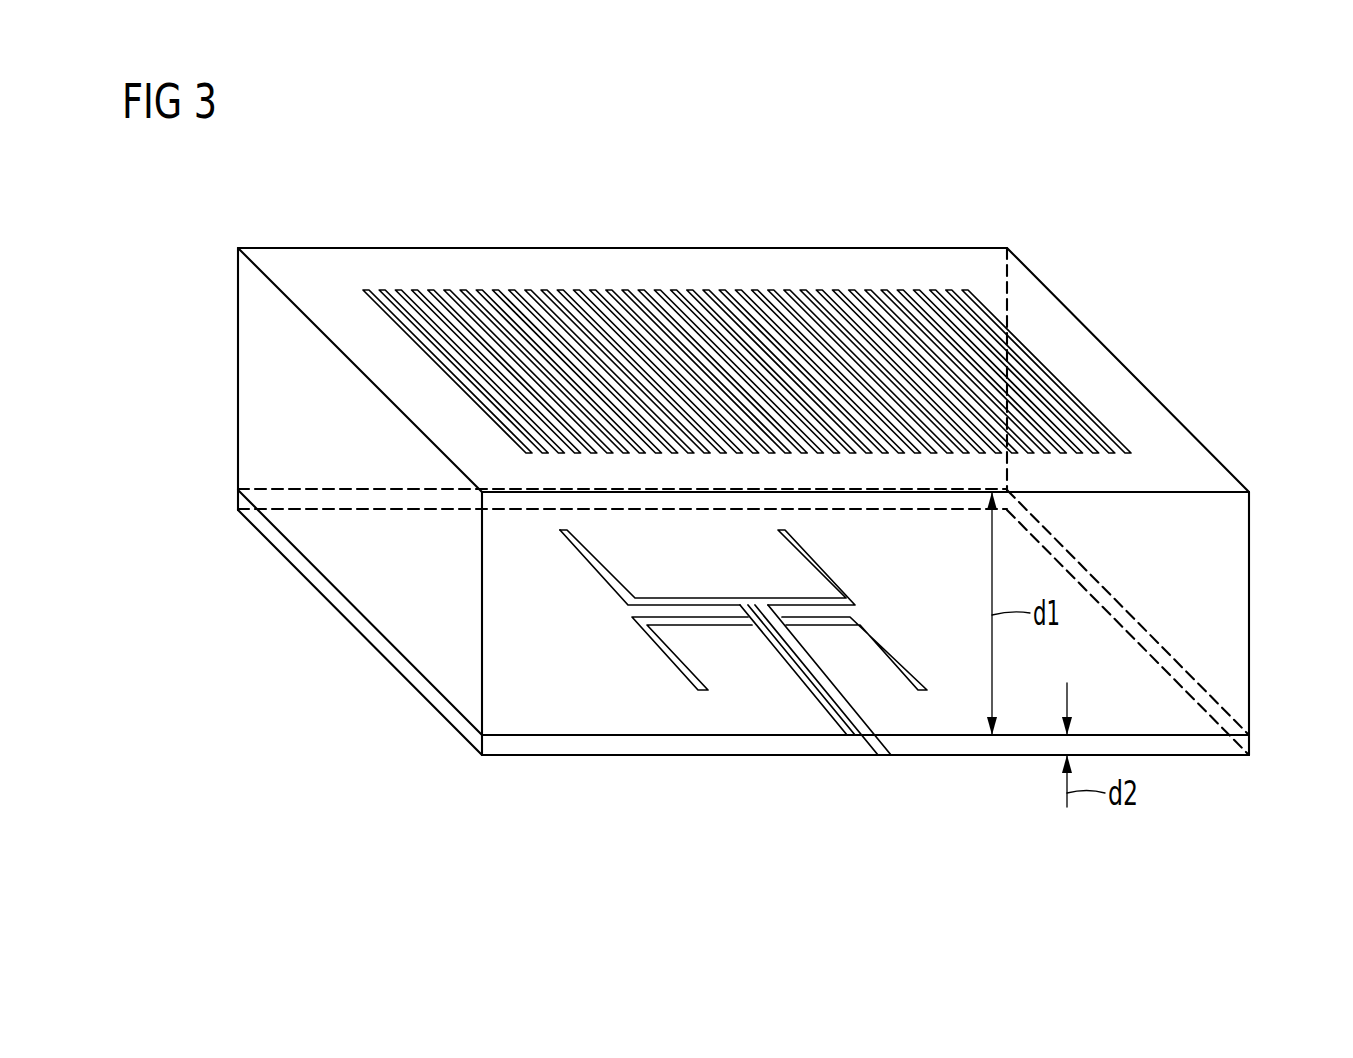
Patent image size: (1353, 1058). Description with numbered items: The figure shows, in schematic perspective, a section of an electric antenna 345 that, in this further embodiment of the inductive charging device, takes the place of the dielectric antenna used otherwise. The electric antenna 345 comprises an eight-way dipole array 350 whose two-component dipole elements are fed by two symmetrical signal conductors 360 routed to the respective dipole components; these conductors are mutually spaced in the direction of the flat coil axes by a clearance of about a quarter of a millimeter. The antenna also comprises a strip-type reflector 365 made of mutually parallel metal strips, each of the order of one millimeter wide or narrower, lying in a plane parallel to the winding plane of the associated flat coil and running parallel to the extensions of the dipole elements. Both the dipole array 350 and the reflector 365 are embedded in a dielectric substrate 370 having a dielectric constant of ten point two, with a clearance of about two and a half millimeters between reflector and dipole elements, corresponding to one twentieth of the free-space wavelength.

The electric antenna 345 is at (202, 272).
The 8-way dipole array 350 is at (680, 697).
The symmetrical signal conductors 360 is at (870, 723).
The strip-type reflector 365 is at (770, 295).
The dielectric substrate 370 is at (1235, 602).